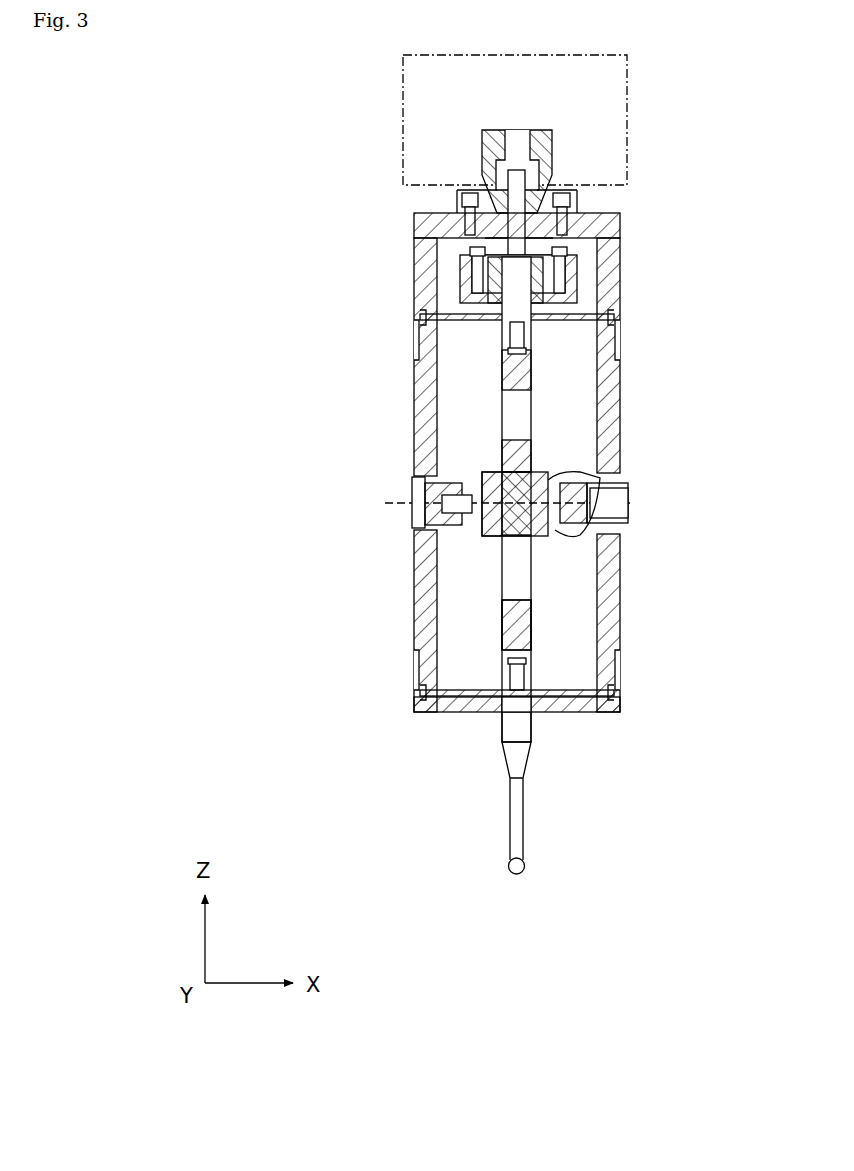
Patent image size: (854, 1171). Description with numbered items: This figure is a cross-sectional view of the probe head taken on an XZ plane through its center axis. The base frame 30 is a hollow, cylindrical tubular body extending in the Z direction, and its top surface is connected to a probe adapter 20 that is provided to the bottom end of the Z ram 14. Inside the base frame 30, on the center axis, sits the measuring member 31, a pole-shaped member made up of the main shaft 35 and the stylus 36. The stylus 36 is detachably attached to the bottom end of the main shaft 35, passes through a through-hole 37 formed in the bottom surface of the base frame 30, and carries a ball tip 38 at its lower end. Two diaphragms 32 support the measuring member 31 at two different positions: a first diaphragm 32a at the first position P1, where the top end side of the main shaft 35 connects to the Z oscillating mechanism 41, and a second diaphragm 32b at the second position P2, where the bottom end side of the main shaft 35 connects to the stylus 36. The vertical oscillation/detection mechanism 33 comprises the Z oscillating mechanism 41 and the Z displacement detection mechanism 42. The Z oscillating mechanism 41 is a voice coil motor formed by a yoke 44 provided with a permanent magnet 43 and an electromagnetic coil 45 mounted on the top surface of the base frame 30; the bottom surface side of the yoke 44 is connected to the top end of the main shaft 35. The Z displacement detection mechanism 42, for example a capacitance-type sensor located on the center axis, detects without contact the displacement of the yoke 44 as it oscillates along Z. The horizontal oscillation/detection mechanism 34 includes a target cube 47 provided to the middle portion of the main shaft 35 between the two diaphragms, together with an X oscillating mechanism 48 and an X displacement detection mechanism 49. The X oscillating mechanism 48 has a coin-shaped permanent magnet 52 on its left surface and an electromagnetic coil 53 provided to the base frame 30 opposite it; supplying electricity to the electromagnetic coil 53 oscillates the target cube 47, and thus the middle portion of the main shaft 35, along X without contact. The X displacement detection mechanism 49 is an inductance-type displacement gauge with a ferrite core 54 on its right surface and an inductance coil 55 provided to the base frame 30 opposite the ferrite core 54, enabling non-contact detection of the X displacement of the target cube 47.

The Z ram 14 is at (627, 78).
The probe adapter 20 is at (552, 150).
The base frame 30 is at (620, 268).
The measuring member 31 is at (534, 378).
The diaphragms 32 is at (586, 324).
The first diaphragm 32a is at (614, 318).
The second diaphragm 32b is at (614, 690).
The vertical oscillation/detection mechanism 33 is at (448, 203).
The horizontal oscillation/detection mechanism 34 is at (560, 458).
The main shaft 35 is at (520, 615).
The stylus 36 is at (524, 802).
The through-hole 37 is at (478, 712).
The ball tip 38 is at (524, 862).
The Z oscillating mechanism 41 is at (428, 262).
The Z displacement detection mechanism 42 is at (578, 200).
The permanent magnet 43 is at (488, 272).
The yoke 44 is at (470, 278).
The electromagnetic coil 45 is at (480, 252).
The target cube 47 is at (484, 476).
The X oscillating mechanism 48 is at (365, 503).
The X displacement detection mechanism 49 is at (654, 501).
The permanent magnet 52 is at (413, 478).
The electromagnetic coil 53 is at (425, 528).
The ferrite core 54 is at (620, 472).
The inductance coil 55 is at (623, 514).
The first position P1 is at (510, 322).
The second position P2 is at (508, 688).